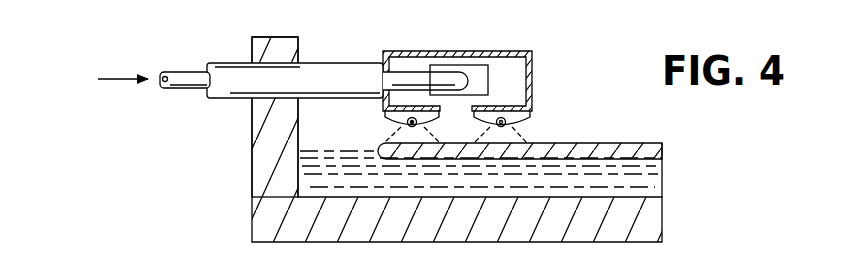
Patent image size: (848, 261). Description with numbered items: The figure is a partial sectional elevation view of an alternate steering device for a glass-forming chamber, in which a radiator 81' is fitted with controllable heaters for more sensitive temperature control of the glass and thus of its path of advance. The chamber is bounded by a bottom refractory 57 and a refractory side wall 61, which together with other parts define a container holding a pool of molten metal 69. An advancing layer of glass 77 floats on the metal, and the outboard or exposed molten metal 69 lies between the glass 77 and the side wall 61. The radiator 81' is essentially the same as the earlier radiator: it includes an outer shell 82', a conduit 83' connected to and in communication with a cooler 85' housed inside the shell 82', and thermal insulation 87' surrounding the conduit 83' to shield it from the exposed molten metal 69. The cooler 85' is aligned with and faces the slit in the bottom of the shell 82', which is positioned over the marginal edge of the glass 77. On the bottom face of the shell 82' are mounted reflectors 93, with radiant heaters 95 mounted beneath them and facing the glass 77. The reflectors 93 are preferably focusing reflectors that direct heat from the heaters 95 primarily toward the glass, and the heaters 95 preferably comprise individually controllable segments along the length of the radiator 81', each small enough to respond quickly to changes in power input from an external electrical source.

The bottom refractory 57 is at (657, 218).
The refractory side wall 61 is at (252, 150).
The molten metal 69 is at (657, 180).
The layer of glass 77 is at (655, 152).
The radiator 81' is at (503, 67).
The shell 82' is at (488, 81).
The conduit 83' is at (170, 64).
The cooler 85' is at (448, 61).
The thermal insulation 87' is at (295, 64).
The reflector 93 is at (530, 117).
The radiant heater 95 is at (506, 121).